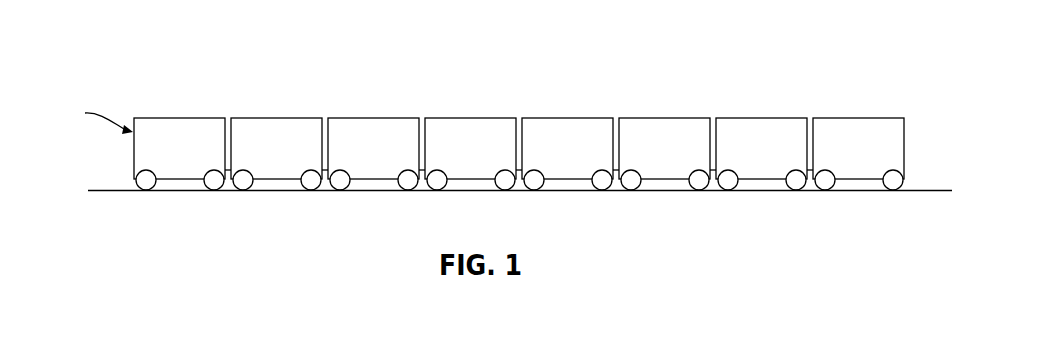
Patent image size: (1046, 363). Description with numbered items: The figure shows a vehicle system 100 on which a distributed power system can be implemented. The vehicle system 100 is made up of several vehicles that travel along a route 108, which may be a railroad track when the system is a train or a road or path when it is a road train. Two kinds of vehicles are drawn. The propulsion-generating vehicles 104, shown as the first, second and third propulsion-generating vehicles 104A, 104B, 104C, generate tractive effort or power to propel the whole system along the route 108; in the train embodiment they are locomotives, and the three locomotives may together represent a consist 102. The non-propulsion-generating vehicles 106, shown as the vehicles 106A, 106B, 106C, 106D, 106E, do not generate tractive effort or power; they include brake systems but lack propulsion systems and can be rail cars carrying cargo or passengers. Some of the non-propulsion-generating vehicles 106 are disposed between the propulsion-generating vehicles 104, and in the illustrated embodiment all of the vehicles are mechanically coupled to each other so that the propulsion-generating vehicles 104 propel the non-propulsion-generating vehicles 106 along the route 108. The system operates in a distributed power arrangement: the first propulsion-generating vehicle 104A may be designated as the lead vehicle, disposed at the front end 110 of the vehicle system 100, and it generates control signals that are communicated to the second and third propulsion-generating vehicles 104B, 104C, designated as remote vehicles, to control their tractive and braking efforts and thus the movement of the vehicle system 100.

The vehicle system 100 is at (852, 48).
The consist 102 is at (201, 101).
The propulsion-generating vehicle 104 is at (148, 118).
The first propulsion-generating vehicle 104A is at (180, 179).
The second propulsion-generating vehicle 104B is at (373, 179).
The third propulsion-generating vehicle 104C is at (762, 179).
The non-propulsion-generating vehicle 106 is at (278, 118).
The non-propulsion-generating vehicle 106A is at (277, 179).
The non-propulsion-generating vehicle 106B is at (470, 118).
The non-propulsion-generating vehicle 106C is at (568, 118).
The non-propulsion-generating vehicle 106D is at (665, 179).
The non-propulsion-generating vehicle 106E is at (859, 179).
The route 108 is at (925, 191).
The front end 110 is at (88, 117).